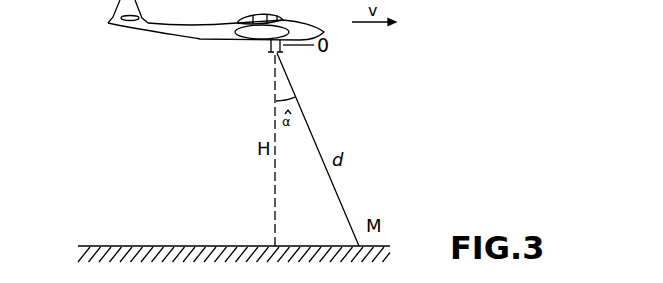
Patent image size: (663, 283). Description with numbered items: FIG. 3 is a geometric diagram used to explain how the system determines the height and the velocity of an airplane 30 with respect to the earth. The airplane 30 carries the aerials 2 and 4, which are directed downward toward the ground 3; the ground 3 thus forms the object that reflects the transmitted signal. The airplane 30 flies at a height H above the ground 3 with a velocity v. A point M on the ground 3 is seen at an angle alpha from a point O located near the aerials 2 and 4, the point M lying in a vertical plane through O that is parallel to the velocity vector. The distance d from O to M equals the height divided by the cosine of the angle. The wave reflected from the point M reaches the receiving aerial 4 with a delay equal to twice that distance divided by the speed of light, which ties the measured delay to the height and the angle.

The aircraft 30 is at (186, 33).
The aerial 2 is at (268, 52).
The receiving aerial 4 is at (282, 51).
The ground 3 is at (163, 246).